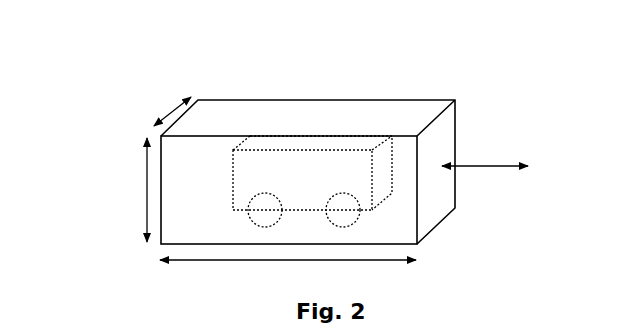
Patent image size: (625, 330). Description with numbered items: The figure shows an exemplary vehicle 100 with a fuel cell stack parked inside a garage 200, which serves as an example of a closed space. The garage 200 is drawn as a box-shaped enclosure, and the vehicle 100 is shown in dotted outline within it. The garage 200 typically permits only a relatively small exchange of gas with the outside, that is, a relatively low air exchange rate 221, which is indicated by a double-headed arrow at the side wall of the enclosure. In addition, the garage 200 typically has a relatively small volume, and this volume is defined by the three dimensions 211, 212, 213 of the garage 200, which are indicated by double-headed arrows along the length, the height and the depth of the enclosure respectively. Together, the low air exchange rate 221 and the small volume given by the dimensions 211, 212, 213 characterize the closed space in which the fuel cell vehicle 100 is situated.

The garage 200 is at (113, 138).
The vehicle 100 is at (322, 138).
The dimension of the garage 211 is at (197, 258).
The dimension of the garage 212 is at (147, 212).
The dimension of the garage 213 is at (162, 112).
The air exchange rate 221 is at (503, 163).